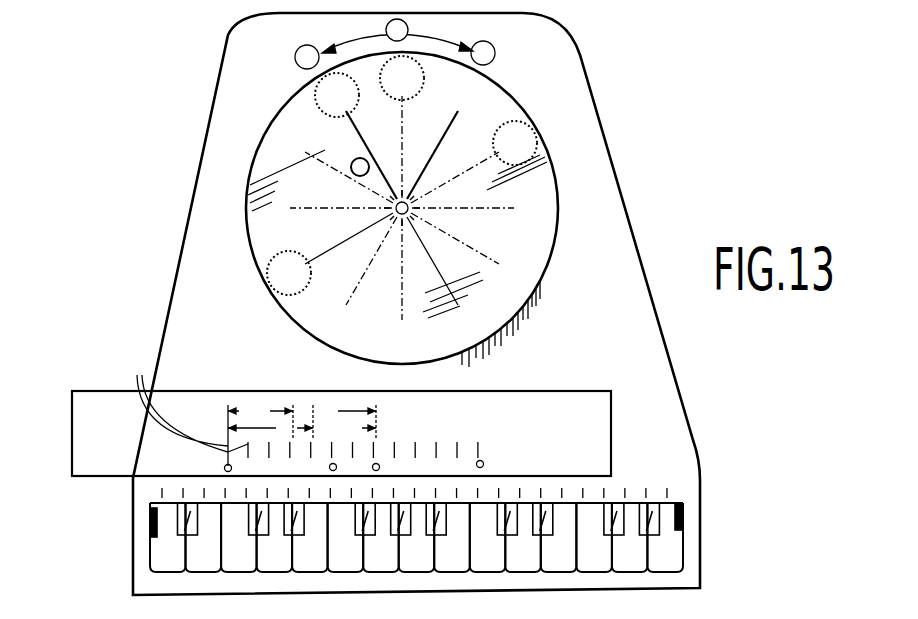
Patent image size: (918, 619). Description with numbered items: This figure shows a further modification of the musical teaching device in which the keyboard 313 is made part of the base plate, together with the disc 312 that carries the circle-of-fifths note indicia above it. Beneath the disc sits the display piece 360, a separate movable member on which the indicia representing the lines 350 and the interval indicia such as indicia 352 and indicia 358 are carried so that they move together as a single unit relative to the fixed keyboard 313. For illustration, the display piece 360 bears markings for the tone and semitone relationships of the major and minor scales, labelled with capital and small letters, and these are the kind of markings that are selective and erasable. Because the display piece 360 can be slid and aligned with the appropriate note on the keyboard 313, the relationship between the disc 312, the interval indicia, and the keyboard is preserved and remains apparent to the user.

The disc 312 is at (563, 192).
The keyboard 313 is at (142, 529).
The lines 350 is at (174, 404).
The indicia 352 is at (224, 468).
The indicia 358 is at (483, 461).
The display piece 360 is at (89, 407).